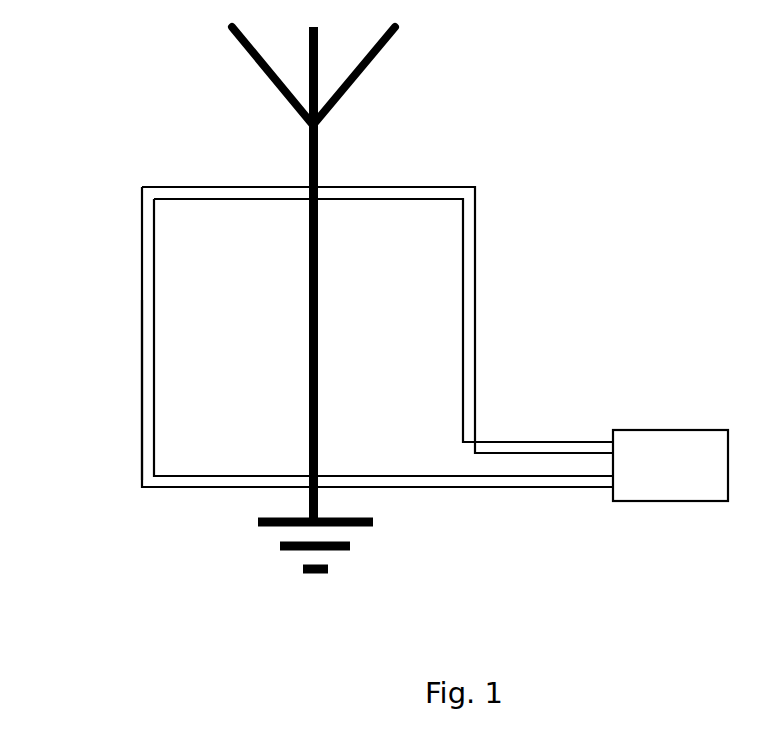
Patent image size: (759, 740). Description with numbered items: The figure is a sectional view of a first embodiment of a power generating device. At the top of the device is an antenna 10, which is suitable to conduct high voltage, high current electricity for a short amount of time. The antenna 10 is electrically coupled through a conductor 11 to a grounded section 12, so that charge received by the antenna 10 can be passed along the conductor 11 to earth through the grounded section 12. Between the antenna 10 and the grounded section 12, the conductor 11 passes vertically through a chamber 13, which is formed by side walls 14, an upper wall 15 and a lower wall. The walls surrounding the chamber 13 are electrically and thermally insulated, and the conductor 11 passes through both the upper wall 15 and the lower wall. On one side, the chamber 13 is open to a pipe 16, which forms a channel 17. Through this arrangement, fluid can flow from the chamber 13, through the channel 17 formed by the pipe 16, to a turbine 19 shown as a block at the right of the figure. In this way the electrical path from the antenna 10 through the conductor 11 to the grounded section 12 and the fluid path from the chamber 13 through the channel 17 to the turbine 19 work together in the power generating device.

The antenna 10 is at (198, 15).
The conductor 11 is at (308, 278).
The grounded section 12 is at (223, 510).
The chamber 13 is at (233, 349).
The side walls 14 is at (142, 417).
The upper wall 15 is at (372, 186).
The pipe 16 is at (520, 442).
The channel 17 is at (499, 465).
The turbine 19 is at (668, 430).